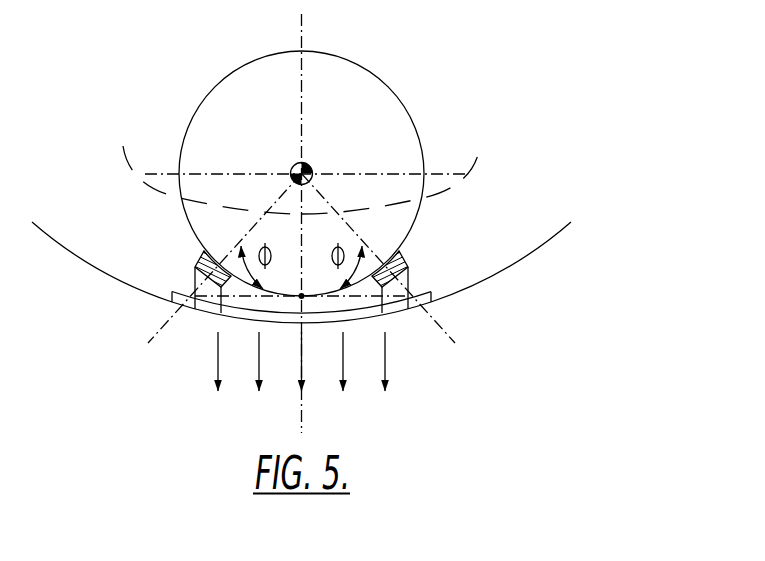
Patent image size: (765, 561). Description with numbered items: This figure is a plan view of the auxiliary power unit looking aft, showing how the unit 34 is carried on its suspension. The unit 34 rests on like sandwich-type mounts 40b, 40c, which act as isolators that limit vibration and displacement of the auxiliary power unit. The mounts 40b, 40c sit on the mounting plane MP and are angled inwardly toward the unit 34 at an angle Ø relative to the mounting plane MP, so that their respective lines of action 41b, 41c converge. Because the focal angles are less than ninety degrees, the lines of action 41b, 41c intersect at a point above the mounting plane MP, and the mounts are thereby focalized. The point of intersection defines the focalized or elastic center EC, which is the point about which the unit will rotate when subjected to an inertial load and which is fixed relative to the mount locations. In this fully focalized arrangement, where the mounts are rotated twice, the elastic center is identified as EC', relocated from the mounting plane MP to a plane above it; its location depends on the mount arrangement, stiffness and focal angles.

The unit 34 is at (438, 102).
The mount 40b is at (421, 245).
The mount 40c is at (193, 254).
The line of action 41b is at (418, 158).
The line of action 41c is at (188, 160).
The elastic center EC is at (224, 374).
The elastic center EC' is at (274, 148).
The mounting plane MP is at (335, 298).